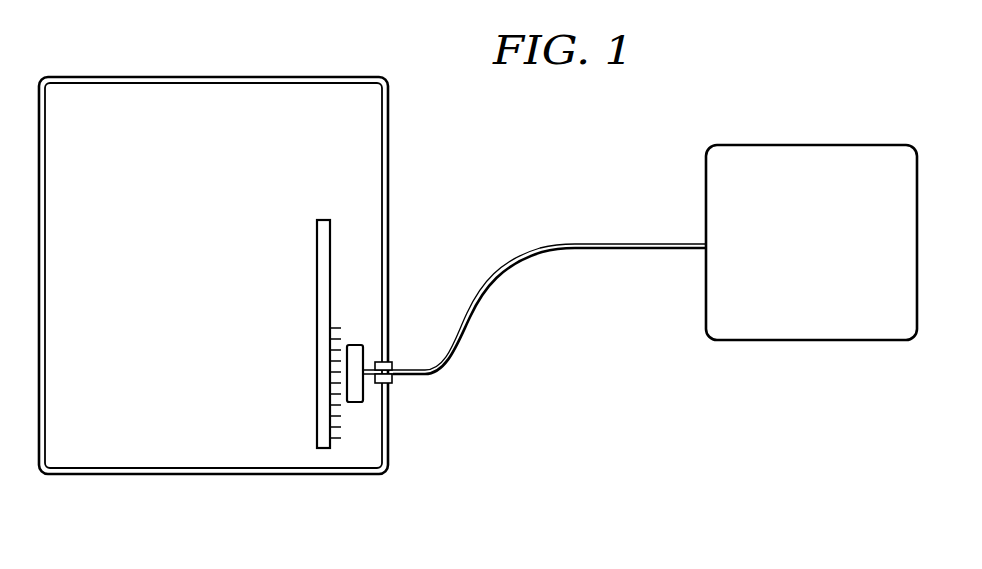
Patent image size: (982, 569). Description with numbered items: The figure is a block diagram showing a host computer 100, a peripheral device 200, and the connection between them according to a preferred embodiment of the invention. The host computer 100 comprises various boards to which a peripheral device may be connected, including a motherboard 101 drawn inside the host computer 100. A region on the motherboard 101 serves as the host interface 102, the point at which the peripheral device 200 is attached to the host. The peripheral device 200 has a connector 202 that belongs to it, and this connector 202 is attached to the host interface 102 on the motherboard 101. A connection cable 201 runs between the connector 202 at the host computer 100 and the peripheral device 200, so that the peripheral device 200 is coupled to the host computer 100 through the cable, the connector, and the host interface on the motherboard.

The host computer 100 is at (212, 77).
The motherboard 101 is at (317, 237).
The host interface 102 is at (338, 449).
The peripheral device 200 is at (808, 145).
The connection cable 201 is at (527, 254).
The connector 202 is at (365, 388).